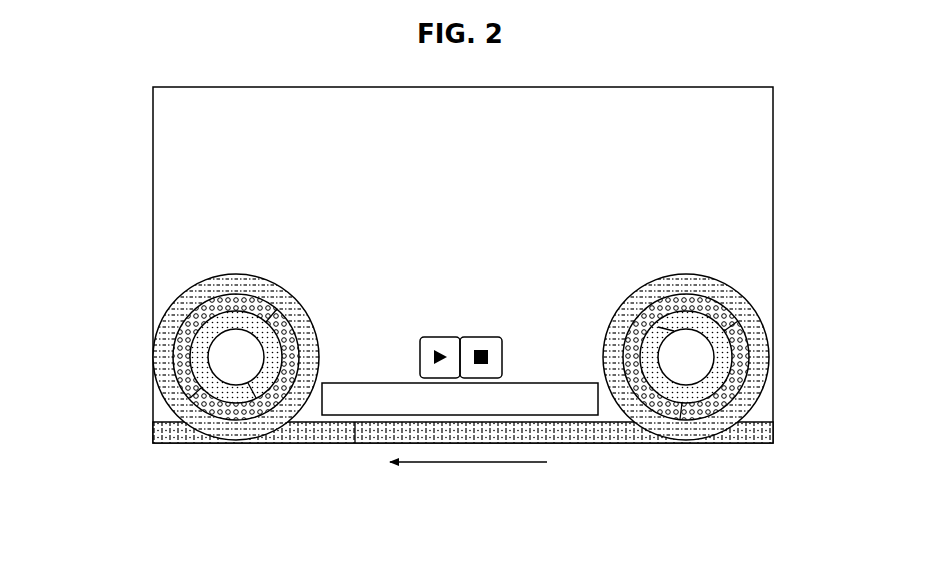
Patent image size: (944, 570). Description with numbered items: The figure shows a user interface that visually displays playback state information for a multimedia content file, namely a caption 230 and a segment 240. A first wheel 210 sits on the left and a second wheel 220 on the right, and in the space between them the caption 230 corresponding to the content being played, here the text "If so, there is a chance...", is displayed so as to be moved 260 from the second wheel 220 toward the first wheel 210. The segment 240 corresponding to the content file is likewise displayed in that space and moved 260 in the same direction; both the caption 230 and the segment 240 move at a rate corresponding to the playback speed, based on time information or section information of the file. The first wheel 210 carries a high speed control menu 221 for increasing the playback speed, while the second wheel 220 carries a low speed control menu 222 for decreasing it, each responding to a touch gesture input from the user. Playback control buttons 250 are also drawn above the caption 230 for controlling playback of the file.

The first wheel 210 is at (187, 385).
The second wheel 220 is at (734, 383).
The high speed control menu 221 is at (236, 375).
The low speed control menu 222 is at (687, 375).
The caption 230 is at (382, 380).
The segment 240 is at (318, 443).
The playback control buttons 250 is at (483, 337).
The movement 260 is at (463, 462).